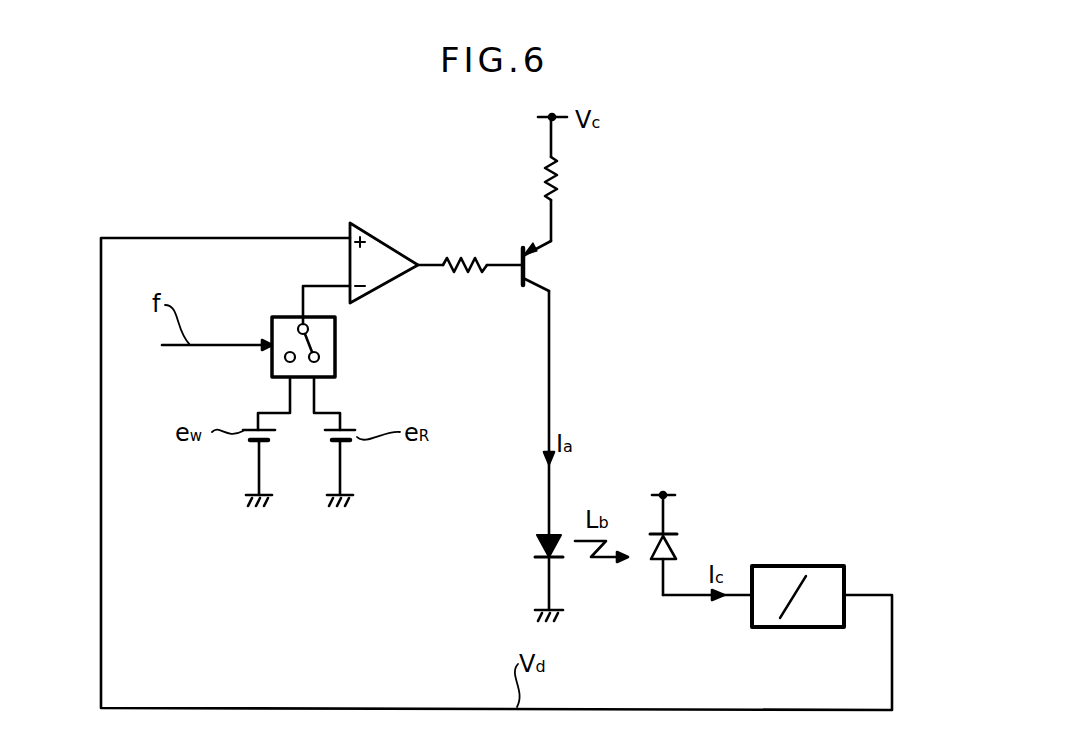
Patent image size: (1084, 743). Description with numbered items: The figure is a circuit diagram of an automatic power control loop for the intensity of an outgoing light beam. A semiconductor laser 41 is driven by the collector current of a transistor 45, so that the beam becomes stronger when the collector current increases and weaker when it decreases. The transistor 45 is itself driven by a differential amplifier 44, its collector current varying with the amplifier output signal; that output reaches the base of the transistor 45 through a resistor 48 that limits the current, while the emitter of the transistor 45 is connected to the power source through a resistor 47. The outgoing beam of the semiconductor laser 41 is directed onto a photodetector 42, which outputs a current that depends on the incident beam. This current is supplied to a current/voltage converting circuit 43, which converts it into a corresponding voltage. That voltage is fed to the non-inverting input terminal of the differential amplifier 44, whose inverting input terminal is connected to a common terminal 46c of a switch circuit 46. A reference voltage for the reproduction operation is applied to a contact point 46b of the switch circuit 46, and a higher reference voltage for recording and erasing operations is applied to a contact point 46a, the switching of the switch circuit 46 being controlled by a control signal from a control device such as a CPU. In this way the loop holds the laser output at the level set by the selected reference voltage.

The semiconductor laser 41 is at (537, 542).
The photodetector 42 is at (677, 556).
The current/voltage converting circuit 43 is at (815, 566).
The differential amplifier 44 is at (383, 235).
The transistor 45 is at (537, 270).
The switch circuit 46 is at (299, 349).
The contact point 46a is at (272, 362).
The contact point 46b is at (335, 372).
The common terminal 46c is at (337, 321).
The resistor 47 is at (562, 177).
The resistor 48 is at (468, 257).